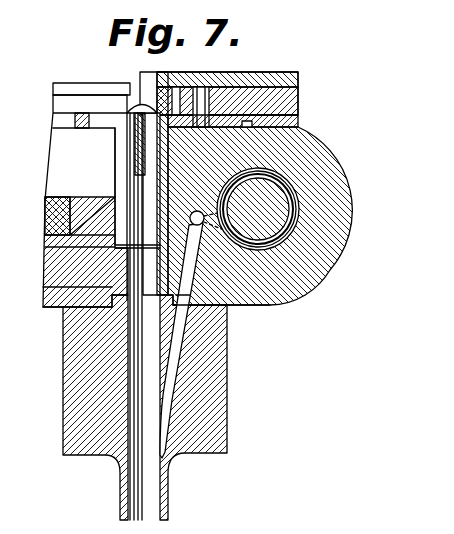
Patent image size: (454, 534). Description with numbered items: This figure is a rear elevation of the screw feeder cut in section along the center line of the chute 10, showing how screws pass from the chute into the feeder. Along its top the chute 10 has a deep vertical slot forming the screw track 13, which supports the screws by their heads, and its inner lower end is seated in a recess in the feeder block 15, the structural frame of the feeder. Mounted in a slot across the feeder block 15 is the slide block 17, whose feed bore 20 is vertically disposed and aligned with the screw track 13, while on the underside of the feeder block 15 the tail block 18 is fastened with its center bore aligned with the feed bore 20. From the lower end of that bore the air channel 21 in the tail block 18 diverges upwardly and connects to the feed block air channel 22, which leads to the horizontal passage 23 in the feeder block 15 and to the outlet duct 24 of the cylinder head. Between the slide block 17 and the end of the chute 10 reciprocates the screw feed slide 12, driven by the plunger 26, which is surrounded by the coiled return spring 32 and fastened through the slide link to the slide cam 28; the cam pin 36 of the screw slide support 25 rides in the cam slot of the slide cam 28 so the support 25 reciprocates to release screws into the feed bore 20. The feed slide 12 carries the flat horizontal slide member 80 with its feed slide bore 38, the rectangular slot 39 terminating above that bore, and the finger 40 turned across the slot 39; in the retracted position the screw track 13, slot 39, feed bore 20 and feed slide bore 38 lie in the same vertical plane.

The chute 10 is at (52, 227).
The screw feed slide 12 is at (120, 227).
The screw track 13 is at (62, 110).
The feeder block 15 is at (57, 305).
The slide block 17 is at (158, 185).
The tail block 18 is at (68, 408).
The feed bore 20 is at (143, 205).
The air channel 21 is at (165, 415).
The feed block air channel 22 is at (186, 289).
The horizontal passage 23 is at (263, 306).
The outlet duct 24 is at (292, 298).
The screw slide support 25 is at (289, 96).
The plunger 26 is at (270, 190).
The slide cam 28 is at (252, 125).
The coiled return spring 32 is at (298, 227).
The cam pin 36 is at (201, 90).
The feed slide bore 38 is at (147, 252).
The slot 39 is at (118, 153).
The finger 40 is at (56, 123).
The flat horizontal slide member 80 is at (160, 253).